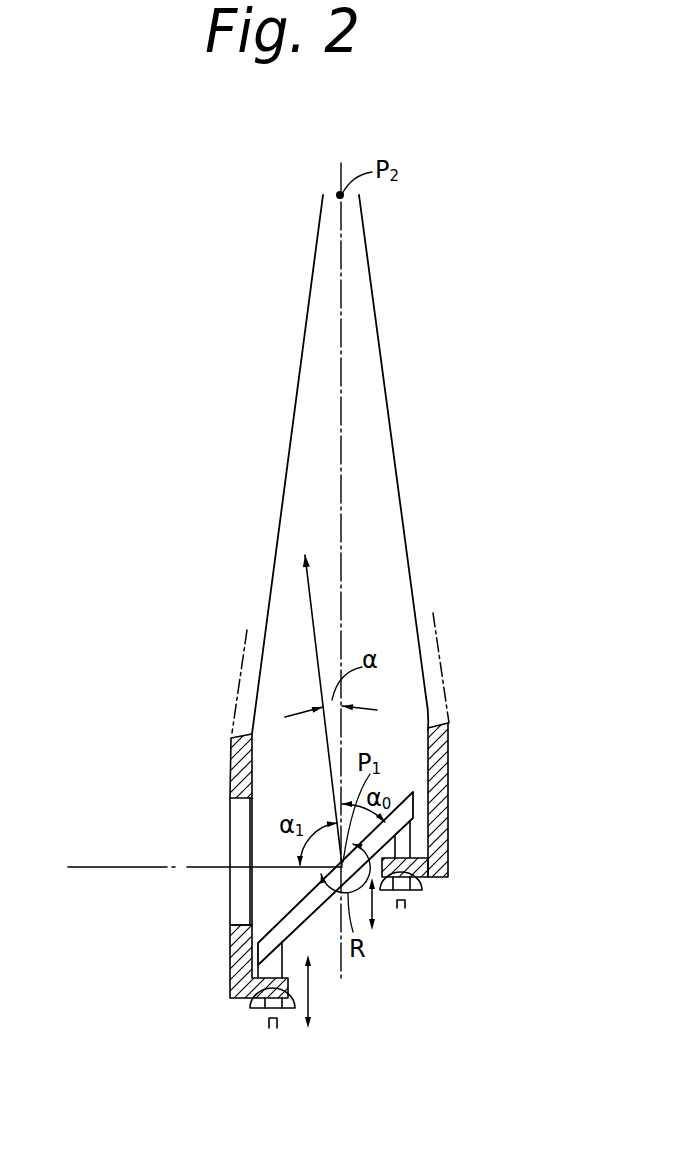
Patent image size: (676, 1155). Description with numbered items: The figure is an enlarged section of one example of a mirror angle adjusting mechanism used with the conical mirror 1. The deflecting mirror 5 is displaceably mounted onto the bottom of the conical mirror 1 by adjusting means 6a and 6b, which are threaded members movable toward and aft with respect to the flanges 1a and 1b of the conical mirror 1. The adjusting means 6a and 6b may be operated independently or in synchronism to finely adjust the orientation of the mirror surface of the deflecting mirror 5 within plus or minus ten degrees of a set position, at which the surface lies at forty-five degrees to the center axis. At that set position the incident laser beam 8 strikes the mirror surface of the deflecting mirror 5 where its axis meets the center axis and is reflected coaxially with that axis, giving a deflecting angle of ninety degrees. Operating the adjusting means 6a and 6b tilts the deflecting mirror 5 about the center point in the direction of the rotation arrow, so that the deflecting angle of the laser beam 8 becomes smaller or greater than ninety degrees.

The conical mirror 1 is at (413, 575).
The flange of the conical mirror 1a is at (432, 878).
The flange of the conical mirror 1b is at (245, 1001).
The deflecting mirror 5 is at (317, 908).
The adjusting means 6a is at (421, 904).
The adjusting means 6b is at (277, 1026).
The laser beam 8 is at (120, 867).